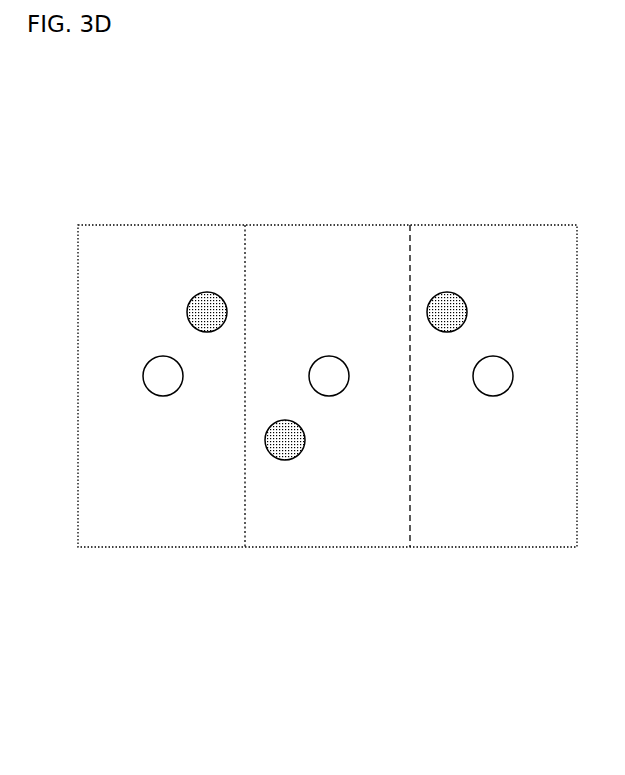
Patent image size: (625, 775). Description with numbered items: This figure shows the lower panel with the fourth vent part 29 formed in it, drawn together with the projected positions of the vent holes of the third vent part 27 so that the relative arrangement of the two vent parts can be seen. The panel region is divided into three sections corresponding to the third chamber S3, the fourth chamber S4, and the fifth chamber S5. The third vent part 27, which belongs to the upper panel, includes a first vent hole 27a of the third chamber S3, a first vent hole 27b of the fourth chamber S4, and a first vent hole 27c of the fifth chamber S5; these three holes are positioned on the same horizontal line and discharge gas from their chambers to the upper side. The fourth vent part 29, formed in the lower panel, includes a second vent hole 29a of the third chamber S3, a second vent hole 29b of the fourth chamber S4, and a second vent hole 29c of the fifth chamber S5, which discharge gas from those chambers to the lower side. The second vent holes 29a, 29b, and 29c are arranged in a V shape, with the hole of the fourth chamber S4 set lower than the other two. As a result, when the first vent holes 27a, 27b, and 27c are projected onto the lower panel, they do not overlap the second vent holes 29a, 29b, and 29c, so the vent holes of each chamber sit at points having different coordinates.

The third vent part 27 is at (530, 158).
The first vent hole of the third chamber 27a is at (163, 356).
The first vent hole of the fourth chamber 27b is at (327, 356).
The first vent hole of the fifth chamber 27c is at (492, 356).
The fourth vent part 29 is at (450, 613).
The second vent hole of the third chamber 29a is at (212, 332).
The second vent hole of the fourth chamber 29b is at (290, 460).
The second vent hole of the fifth chamber 29c is at (447, 332).
The third chamber S3 is at (162, 463).
The fourth chamber S4 is at (329, 462).
The fifth chamber S5 is at (491, 462).